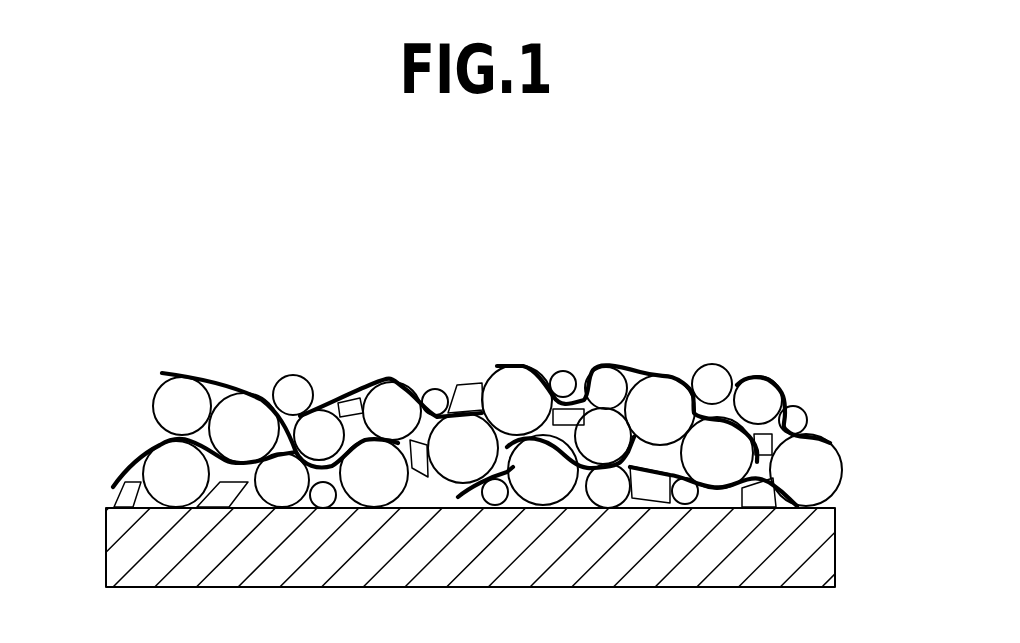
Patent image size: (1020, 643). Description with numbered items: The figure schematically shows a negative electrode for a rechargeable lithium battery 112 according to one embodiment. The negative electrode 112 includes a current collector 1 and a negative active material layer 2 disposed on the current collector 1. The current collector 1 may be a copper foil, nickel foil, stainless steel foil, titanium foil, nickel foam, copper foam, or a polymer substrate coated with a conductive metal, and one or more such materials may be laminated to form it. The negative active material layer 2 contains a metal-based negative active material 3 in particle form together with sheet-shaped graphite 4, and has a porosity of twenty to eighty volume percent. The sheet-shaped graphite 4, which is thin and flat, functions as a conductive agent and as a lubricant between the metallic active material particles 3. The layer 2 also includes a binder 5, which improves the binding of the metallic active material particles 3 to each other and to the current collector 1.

The negative electrode for a rechargeable lithium battery 112 is at (517, 271).
The current collector 1 is at (154, 545).
The negative active material layer 2 is at (87, 395).
The metal-based negative active material 3 is at (295, 392).
The sheet-shaped graphite 4 is at (467, 395).
The binder 5 is at (142, 478).